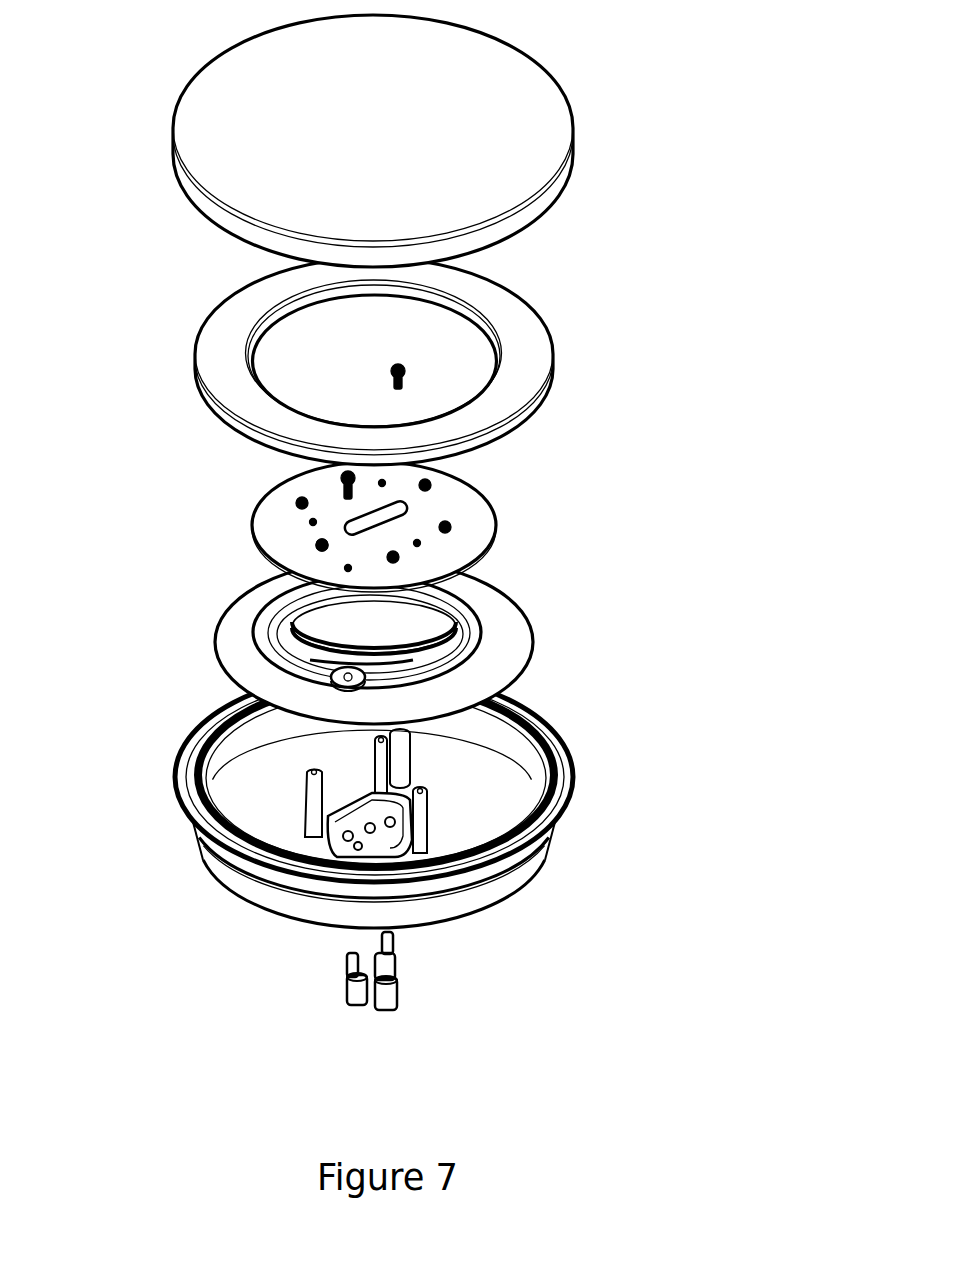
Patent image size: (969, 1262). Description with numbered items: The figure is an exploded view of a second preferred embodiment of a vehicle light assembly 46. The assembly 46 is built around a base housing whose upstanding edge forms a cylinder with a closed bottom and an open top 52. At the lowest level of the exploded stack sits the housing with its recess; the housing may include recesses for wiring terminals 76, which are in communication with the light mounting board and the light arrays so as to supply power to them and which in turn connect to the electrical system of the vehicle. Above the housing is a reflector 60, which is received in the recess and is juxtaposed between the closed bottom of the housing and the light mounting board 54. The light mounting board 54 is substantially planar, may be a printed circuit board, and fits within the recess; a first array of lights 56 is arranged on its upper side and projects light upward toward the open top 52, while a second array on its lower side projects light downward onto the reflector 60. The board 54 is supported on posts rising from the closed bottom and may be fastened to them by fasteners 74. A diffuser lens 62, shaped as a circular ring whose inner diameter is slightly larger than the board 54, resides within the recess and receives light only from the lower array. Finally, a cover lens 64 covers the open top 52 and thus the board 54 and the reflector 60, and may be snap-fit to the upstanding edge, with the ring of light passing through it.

The vehicle light assembly 46 is at (200, 900).
The open top 52 is at (577, 756).
The light mounting board 54 is at (470, 510).
The first array of lights 56 is at (322, 547).
The reflector 60 is at (516, 620).
The diffuser lens 62 is at (533, 357).
The cover lens 64 is at (517, 140).
The fasteners 74 is at (390, 377).
The wiring terminals 76 is at (390, 1005).